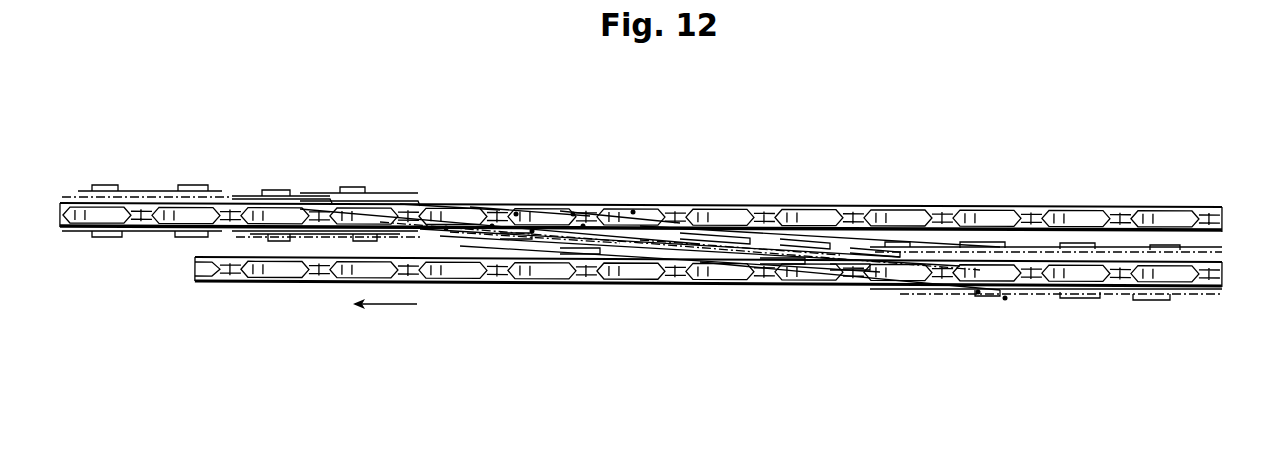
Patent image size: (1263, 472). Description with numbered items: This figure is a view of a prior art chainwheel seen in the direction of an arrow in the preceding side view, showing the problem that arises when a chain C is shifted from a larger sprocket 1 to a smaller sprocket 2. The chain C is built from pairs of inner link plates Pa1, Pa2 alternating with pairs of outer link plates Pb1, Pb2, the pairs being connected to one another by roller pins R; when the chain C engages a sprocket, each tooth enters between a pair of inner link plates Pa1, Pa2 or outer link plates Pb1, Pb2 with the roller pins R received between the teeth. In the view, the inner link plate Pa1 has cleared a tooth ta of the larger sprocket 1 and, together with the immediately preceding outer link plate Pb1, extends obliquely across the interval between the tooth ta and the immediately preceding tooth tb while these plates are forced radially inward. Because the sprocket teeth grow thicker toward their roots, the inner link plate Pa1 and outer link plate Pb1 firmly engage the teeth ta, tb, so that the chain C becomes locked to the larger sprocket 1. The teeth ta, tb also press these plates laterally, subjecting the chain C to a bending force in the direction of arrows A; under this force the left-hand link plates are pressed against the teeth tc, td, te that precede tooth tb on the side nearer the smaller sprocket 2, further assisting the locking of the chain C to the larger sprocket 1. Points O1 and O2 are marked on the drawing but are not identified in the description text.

The larger sprocket 1 is at (1078, 204).
The smaller sprocket 2 is at (292, 286).
The arrows indicating bending force direction A is at (232, 168).
The chain C is at (1192, 303).
The roller pin R is at (446, 230).
The tooth te is at (240, 205).
The tooth td is at (336, 200).
The tooth tc is at (404, 204).
The tooth tb is at (480, 205).
The tooth ta is at (590, 208).
The inner link plate Pa1 is at (575, 212).
The outer link plate Pb1 is at (518, 212).
The inner link plate Pa2 is at (583, 228).
The outer link plate Pb2 is at (492, 228).
The center O1 is at (636, 210).
The center O2 is at (978, 294).